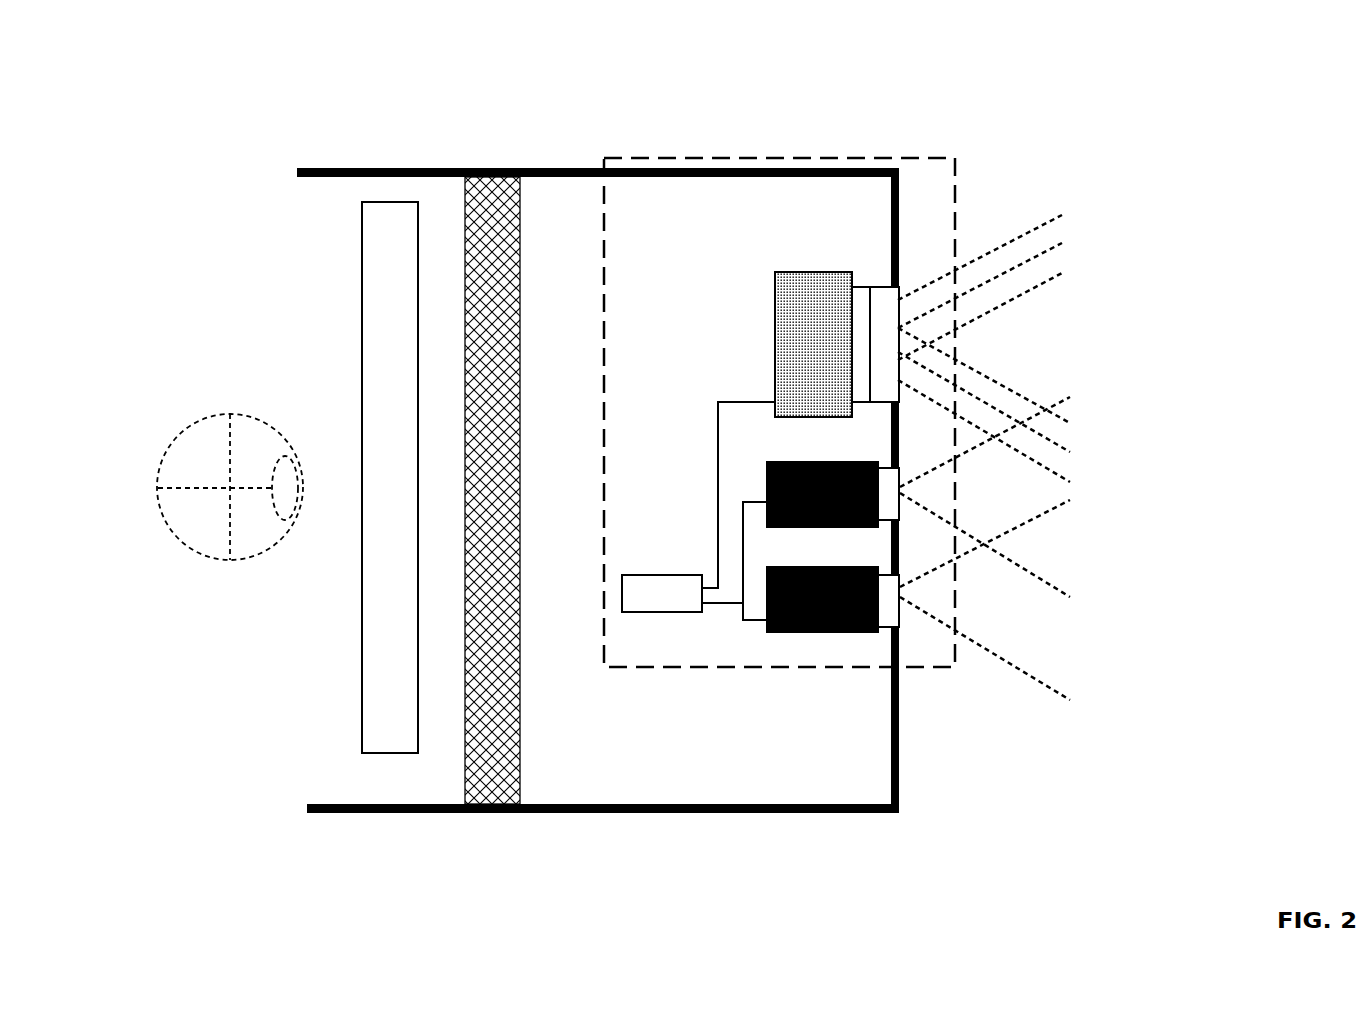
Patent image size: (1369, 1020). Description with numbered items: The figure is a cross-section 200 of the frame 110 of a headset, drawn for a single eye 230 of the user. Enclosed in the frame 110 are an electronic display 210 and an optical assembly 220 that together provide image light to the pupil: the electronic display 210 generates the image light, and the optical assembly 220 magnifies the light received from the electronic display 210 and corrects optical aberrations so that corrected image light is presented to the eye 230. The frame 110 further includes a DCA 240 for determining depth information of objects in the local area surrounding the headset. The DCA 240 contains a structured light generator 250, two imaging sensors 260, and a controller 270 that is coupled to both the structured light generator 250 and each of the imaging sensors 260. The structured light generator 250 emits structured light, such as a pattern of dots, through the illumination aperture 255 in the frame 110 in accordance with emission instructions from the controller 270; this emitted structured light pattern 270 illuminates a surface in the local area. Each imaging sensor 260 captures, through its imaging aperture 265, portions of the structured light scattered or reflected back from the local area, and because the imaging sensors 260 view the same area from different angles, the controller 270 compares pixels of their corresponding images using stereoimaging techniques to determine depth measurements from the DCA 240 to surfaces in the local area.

The cross-section 200 is at (113, 79).
The frame 110 is at (862, 812).
The electronic display 210 is at (467, 230).
The optical assembly 220 is at (407, 753).
The eye 230 is at (192, 550).
The DCA 240 is at (637, 157).
The structured light generator 250 is at (815, 272).
The illumination aperture 255 is at (900, 287).
The imaging sensor 260 is at (772, 527).
The imaging aperture 265 is at (900, 513).
The controller 270 is at (640, 612).